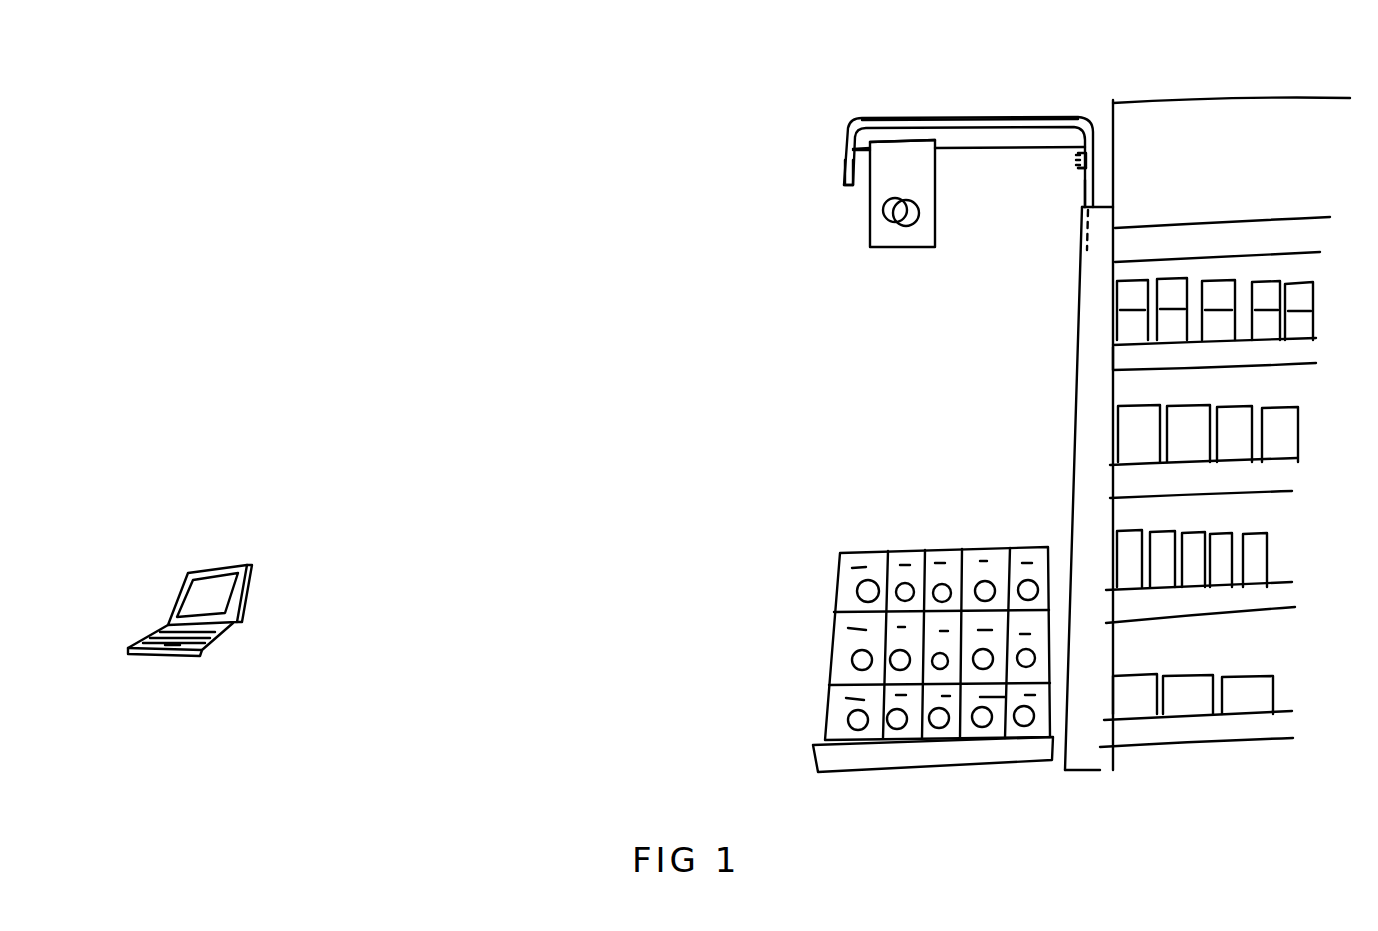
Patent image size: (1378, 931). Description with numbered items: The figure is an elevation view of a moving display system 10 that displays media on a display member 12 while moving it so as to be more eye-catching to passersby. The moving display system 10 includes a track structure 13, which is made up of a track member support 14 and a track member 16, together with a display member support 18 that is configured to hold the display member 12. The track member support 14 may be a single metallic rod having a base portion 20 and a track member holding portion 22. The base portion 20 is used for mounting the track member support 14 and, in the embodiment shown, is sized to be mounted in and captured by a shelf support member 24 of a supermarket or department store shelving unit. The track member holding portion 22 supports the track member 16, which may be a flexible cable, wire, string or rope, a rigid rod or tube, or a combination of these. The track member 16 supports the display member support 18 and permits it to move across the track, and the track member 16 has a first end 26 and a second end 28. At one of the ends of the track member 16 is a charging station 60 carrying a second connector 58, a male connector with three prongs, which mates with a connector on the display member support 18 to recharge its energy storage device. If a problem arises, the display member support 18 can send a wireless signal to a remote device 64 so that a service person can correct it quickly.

The moving display system 10 is at (800, 130).
The display member 12 is at (935, 185).
The track structure 13 is at (840, 112).
The track member support 14 is at (943, 108).
The track member 16 is at (1003, 148).
The display member support 18 is at (862, 207).
The base portion 20 is at (1085, 185).
The track member holding portion 22 is at (985, 112).
The shelf support member 24 is at (1079, 292).
The first end 26 is at (1093, 145).
The second end 28 is at (848, 148).
The second connector 58 is at (1070, 160).
The charging station 60 is at (1082, 170).
The remote device 64 is at (252, 580).